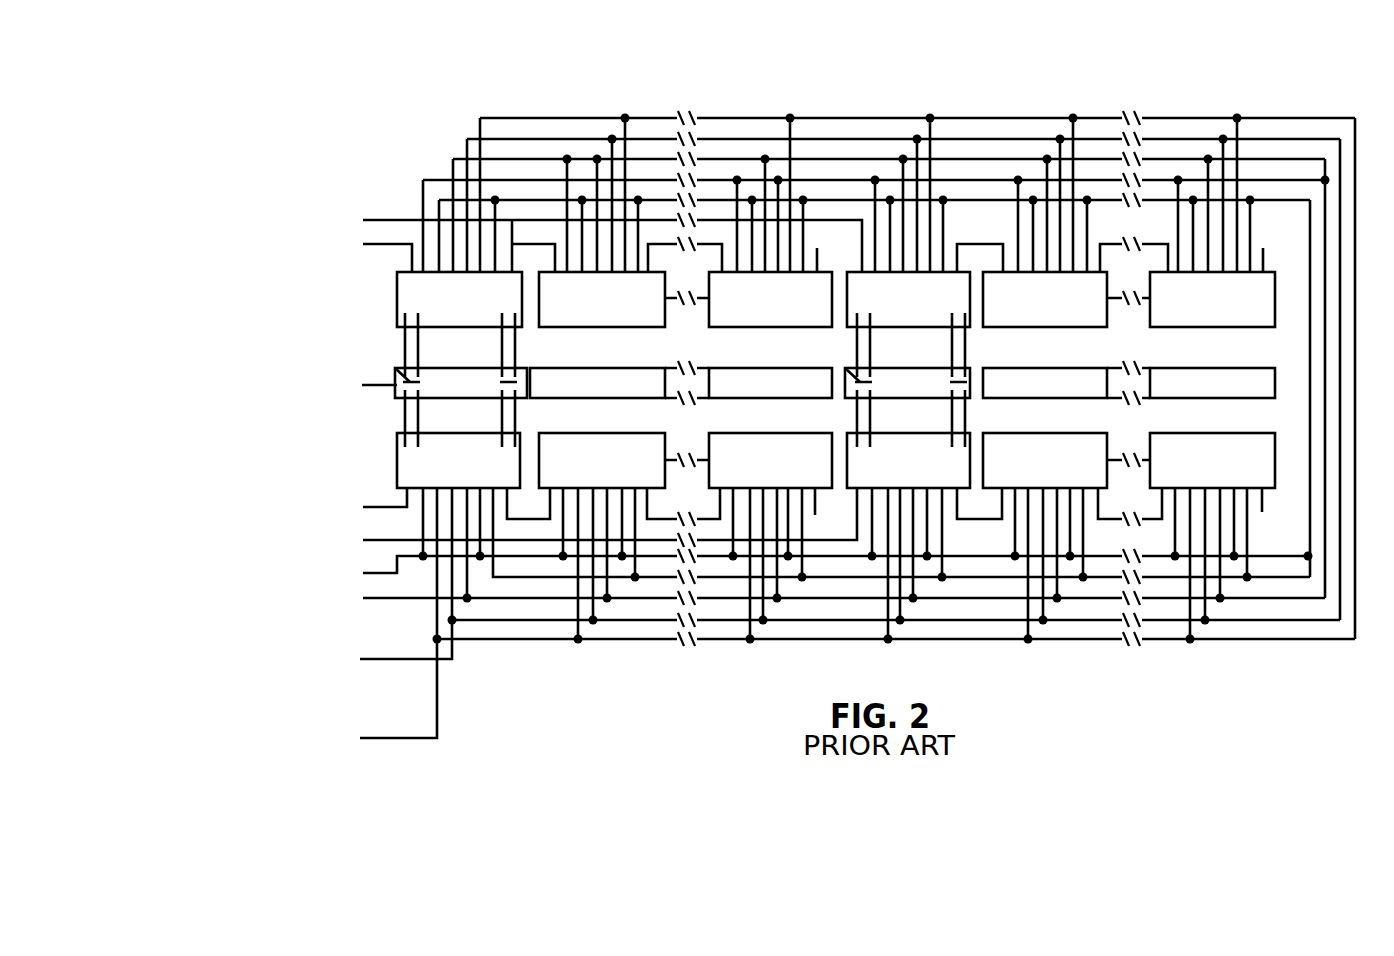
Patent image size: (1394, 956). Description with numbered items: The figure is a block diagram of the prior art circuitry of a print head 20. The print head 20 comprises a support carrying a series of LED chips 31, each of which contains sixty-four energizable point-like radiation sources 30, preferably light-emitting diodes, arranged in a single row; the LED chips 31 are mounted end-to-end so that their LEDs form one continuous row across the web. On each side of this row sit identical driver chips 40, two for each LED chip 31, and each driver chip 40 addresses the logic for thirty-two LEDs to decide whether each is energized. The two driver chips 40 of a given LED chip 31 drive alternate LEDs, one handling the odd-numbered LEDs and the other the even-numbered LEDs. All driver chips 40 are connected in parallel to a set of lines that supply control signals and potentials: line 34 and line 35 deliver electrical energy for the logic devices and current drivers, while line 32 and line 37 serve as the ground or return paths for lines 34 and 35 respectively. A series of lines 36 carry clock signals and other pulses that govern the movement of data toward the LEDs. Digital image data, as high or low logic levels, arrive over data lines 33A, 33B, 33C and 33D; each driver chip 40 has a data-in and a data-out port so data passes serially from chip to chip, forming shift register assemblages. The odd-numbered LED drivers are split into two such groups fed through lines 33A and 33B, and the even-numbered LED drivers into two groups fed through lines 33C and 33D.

The print head 20 is at (857, 100).
The energizable point-like radiation sources 30 is at (397, 369).
The LED chips 31 is at (436, 368).
The LED ground line 32 is at (372, 393).
The data line 33A is at (394, 246).
The data line 33B is at (372, 220).
The data line 33C is at (393, 507).
The data line 33D is at (377, 538).
The electrical energy line 34 is at (439, 695).
The electrical energy line 35 is at (523, 600).
The clock and pulse lines 36 is at (453, 645).
The logic ground line 37 is at (527, 559).
The driver chips 40 is at (397, 297).